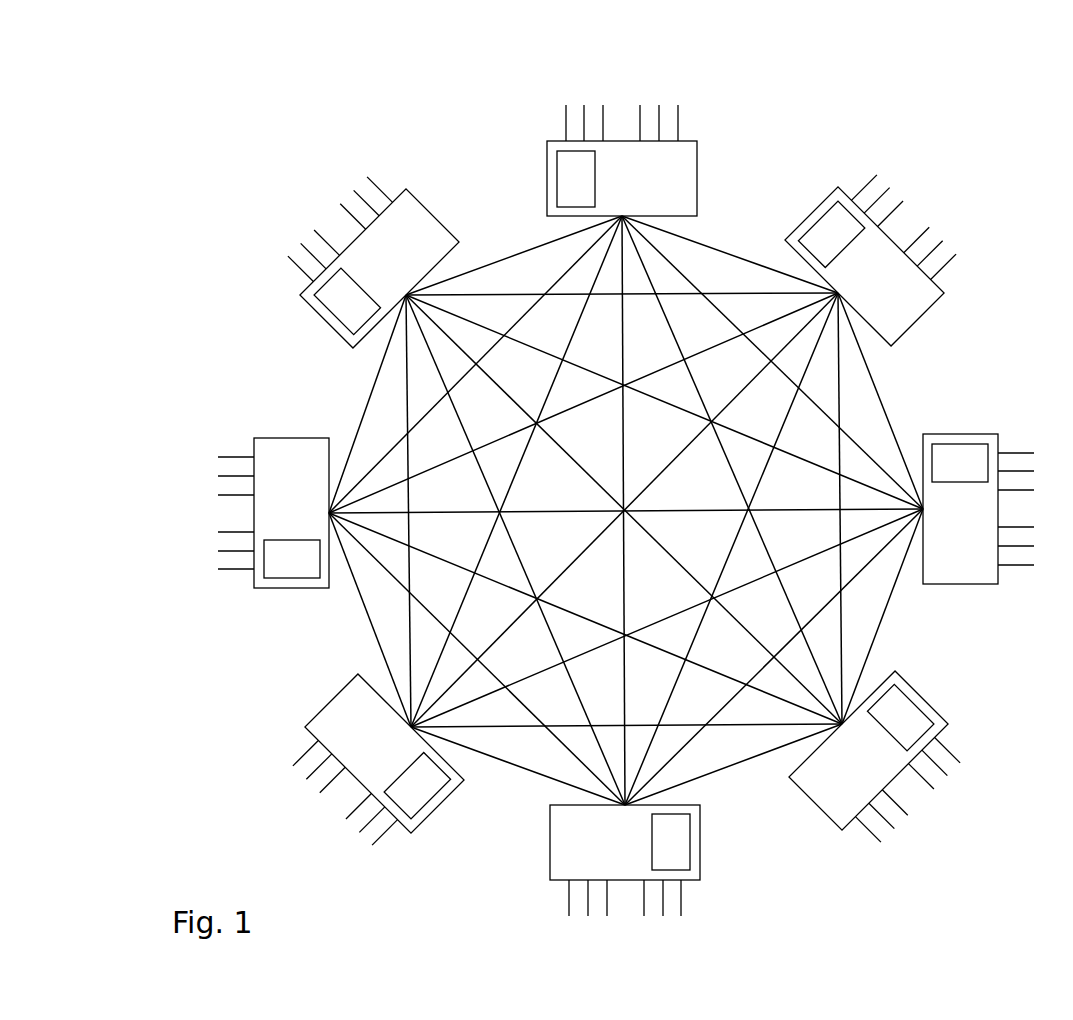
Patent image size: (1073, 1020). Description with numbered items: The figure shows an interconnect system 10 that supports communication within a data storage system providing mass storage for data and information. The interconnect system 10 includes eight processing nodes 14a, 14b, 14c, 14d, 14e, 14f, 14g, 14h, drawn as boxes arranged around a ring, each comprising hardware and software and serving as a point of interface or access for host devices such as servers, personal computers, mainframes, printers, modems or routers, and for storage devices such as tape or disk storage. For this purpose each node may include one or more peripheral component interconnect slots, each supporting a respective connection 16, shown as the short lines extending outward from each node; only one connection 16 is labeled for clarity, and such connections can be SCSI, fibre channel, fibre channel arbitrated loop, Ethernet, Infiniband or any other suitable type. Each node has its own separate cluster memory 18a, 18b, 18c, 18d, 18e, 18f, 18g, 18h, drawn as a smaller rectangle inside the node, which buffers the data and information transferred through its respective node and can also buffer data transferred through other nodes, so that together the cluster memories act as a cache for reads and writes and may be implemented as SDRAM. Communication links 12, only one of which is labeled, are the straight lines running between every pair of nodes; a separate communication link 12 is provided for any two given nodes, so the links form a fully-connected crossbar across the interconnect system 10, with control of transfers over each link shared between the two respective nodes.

The interconnect system 10 is at (643, 477).
The communication link 12 is at (712, 248).
The processing node 14a is at (698, 170).
The processing node 14b is at (927, 308).
The processing node 14c is at (982, 583).
The processing node 14d is at (820, 808).
The processing node 14e is at (551, 840).
The processing node 14f is at (327, 713).
The processing node 14g is at (315, 440).
The processing node 14h is at (436, 220).
The connection 16 is at (1023, 452).
The cluster memory 18a is at (556, 190).
The cluster memory 18b is at (813, 225).
The cluster memory 18c is at (977, 443).
The cluster memory 18d is at (917, 698).
The cluster memory 18e is at (691, 848).
The cluster memory 18f is at (431, 810).
The cluster memory 18g is at (302, 581).
The cluster memory 18h is at (327, 313).